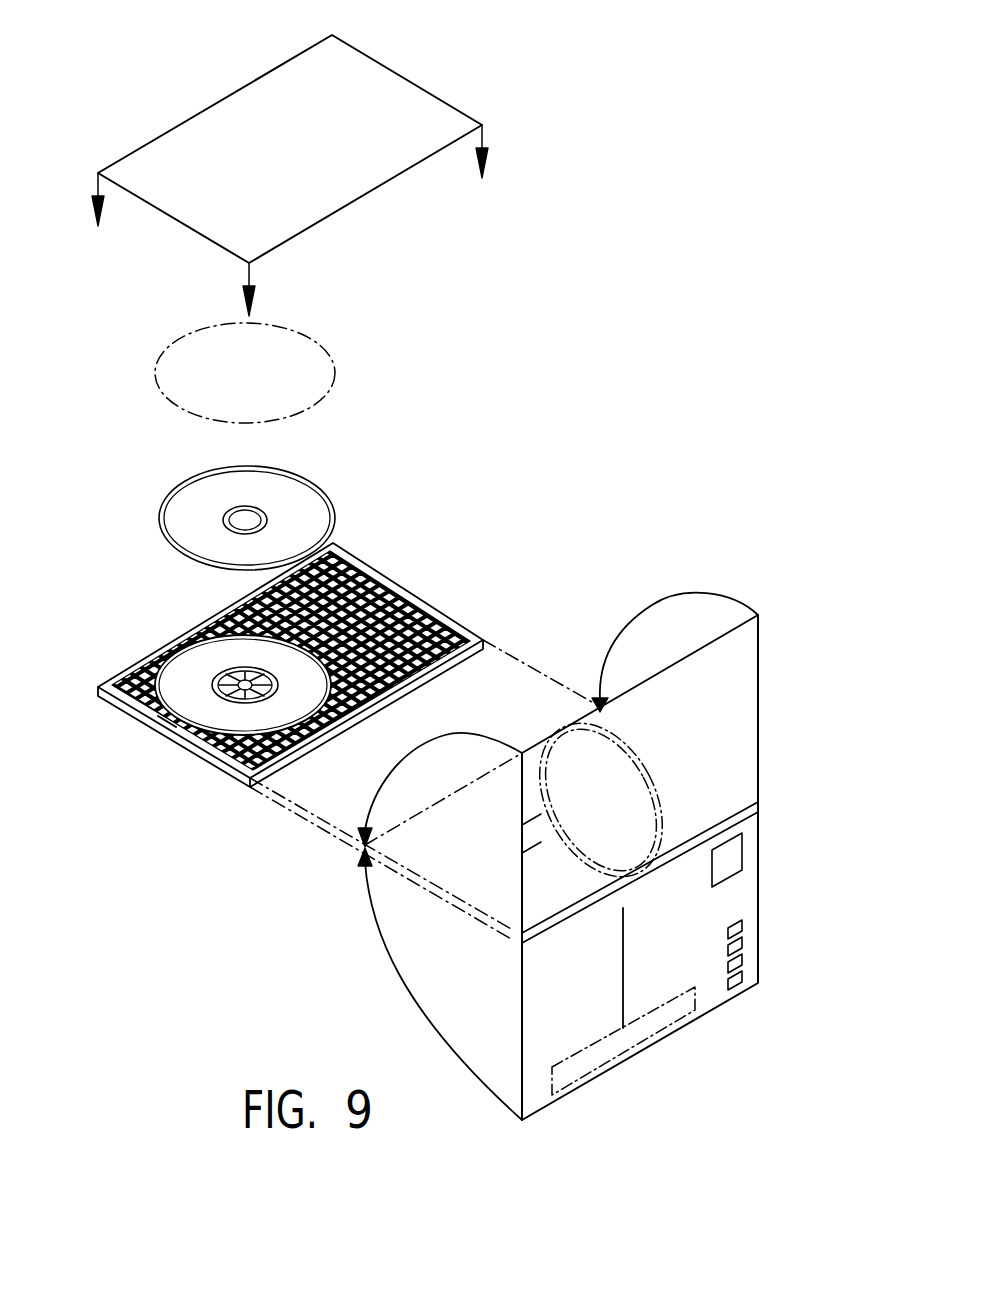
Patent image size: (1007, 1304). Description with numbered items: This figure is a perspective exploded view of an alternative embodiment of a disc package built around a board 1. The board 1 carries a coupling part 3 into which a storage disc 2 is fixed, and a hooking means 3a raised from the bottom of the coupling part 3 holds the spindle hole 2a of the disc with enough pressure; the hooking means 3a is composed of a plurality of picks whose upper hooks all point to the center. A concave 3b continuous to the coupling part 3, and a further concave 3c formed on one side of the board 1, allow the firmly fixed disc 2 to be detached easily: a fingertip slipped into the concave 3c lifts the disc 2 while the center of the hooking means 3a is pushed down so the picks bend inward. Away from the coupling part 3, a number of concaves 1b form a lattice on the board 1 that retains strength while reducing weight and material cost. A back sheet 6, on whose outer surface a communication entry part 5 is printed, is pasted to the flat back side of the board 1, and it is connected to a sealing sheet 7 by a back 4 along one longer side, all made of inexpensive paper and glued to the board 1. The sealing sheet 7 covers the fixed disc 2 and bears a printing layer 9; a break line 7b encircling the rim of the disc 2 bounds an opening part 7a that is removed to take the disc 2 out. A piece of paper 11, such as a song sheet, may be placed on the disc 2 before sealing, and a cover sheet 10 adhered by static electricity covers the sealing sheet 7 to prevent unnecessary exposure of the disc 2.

The board 1 is at (260, 683).
The concaves 1b is at (395, 587).
The storage disc 2 is at (246, 518).
The spindle hole 2a is at (258, 525).
The coupling part 3 is at (232, 702).
The hooking means 3a is at (233, 706).
The concave 3b is at (270, 720).
The concave 3c is at (175, 723).
The back 4 is at (558, 928).
The communication entry part 5 is at (703, 942).
The back sheet 6 is at (635, 1052).
The sealing sheet 7 is at (599, 856).
The opening part 7a is at (665, 746).
The break line 7b is at (548, 738).
The printing layer 9 is at (695, 770).
The cover sheet 10 is at (397, 89).
The piece of paper 11 is at (338, 372).